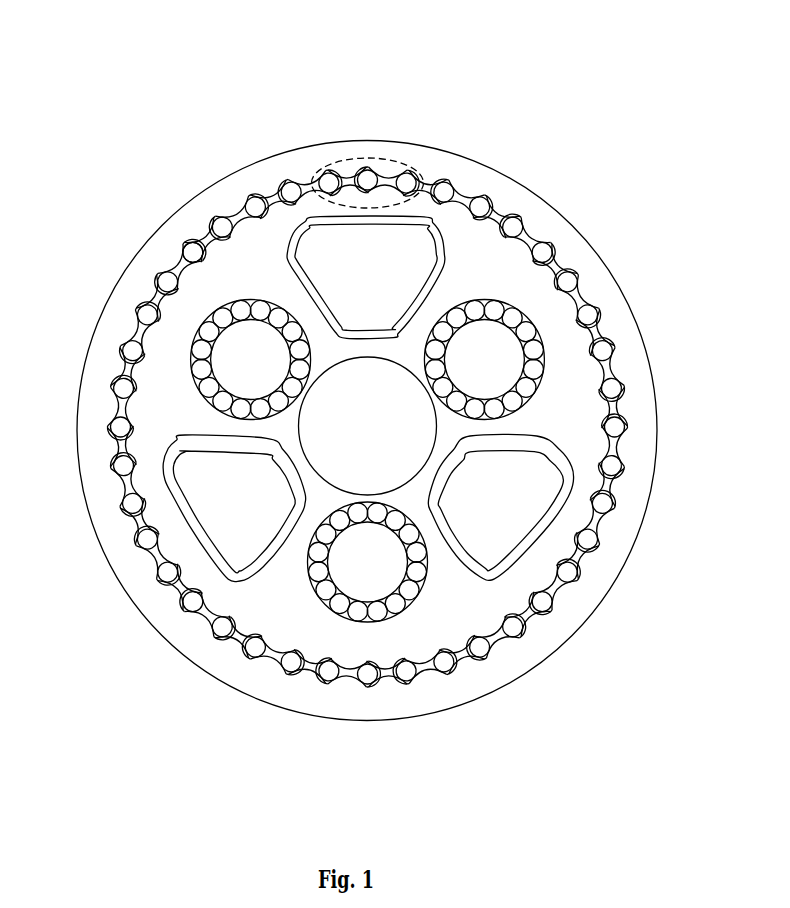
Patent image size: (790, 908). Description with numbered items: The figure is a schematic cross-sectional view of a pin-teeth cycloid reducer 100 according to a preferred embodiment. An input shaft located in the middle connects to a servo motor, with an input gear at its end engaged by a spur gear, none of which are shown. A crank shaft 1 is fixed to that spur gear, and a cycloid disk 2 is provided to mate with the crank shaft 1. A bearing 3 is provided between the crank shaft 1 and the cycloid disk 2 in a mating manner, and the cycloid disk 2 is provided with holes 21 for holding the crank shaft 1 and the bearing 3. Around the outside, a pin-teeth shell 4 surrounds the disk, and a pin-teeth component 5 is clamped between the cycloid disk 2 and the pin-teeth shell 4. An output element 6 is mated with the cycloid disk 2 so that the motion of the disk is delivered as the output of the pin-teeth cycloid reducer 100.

The pin-teeth cycloid reducer 100 is at (337, 110).
The crank shaft 1 is at (547, 285).
The cycloid disk 2 is at (277, 600).
The holes 21 is at (547, 360).
The bearing 3 is at (403, 610).
The pin-teeth shell 4 is at (458, 180).
The pin-teeth component 5 is at (182, 252).
The output element 6 is at (498, 515).